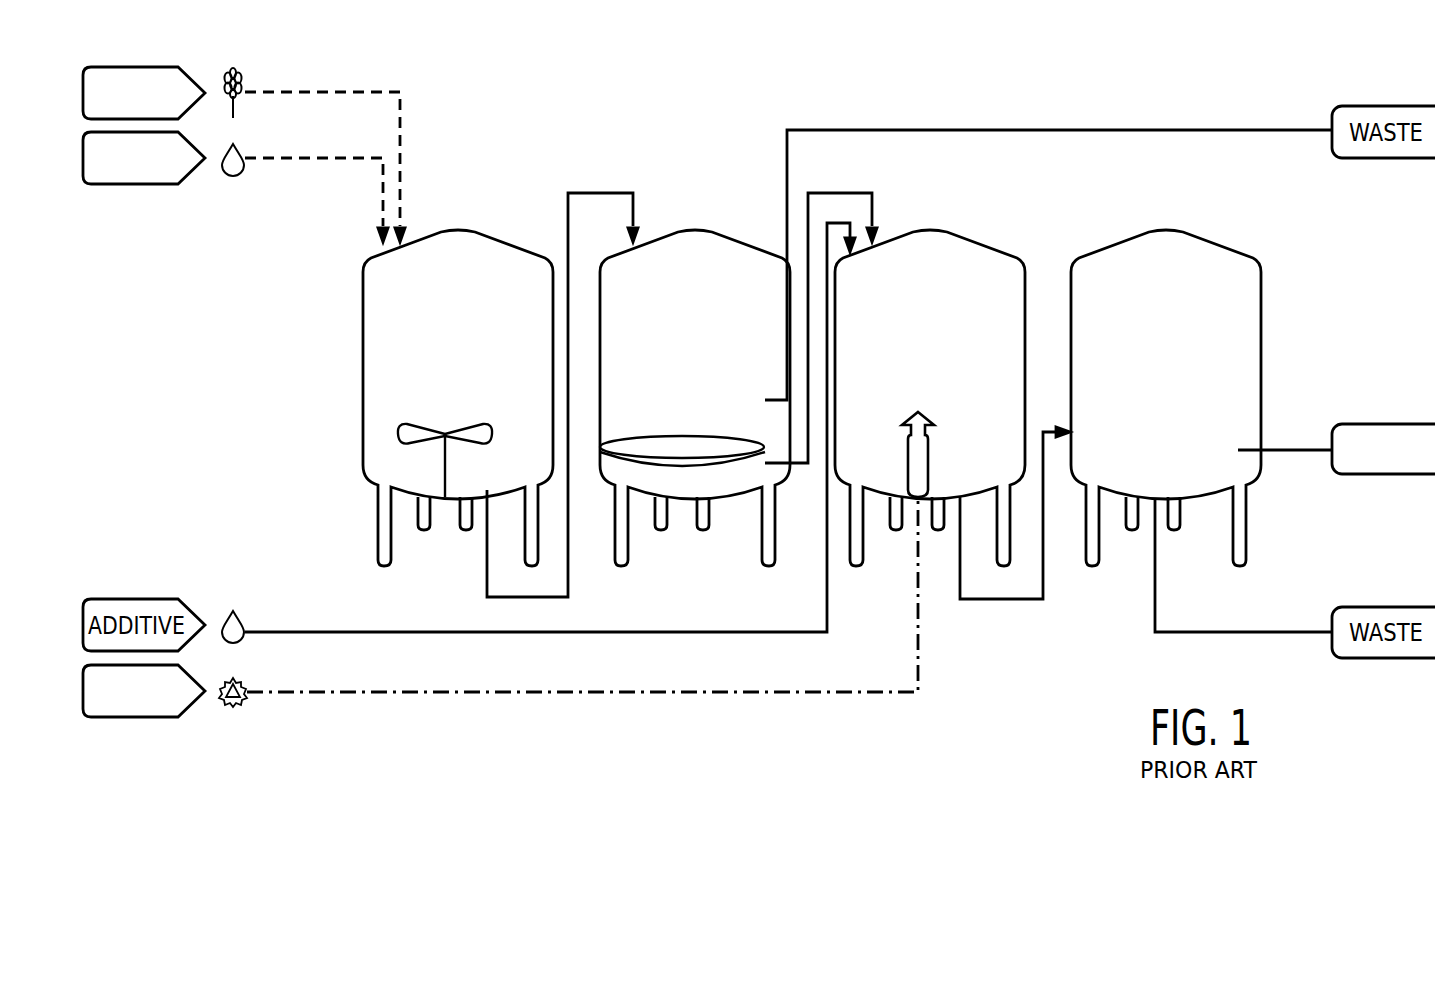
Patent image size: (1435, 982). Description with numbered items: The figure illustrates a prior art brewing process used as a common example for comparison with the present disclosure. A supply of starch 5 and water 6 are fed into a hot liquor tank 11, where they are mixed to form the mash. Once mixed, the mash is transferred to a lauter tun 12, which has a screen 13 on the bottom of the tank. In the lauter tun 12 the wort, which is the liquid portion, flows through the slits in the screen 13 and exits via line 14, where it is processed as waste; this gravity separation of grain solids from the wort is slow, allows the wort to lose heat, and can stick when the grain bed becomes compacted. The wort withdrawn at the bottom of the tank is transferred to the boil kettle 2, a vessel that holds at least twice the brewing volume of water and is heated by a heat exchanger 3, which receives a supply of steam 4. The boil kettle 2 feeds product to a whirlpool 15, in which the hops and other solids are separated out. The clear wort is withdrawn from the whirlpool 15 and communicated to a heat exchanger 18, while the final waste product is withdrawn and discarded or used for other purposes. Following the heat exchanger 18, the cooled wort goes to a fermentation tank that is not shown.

The boil kettle 2 is at (968, 245).
The heat exchanger 3 is at (906, 422).
The supply of steam 4 is at (137, 717).
The supply of starch 5 is at (137, 67).
The water 6 is at (137, 184).
The hot liquor tank 11 is at (493, 245).
The lauter tun 12 is at (730, 245).
The screen 13 is at (685, 442).
The line 14 is at (840, 192).
The whirlpool 15 is at (1203, 245).
The heat exchanger 18 is at (1385, 422).